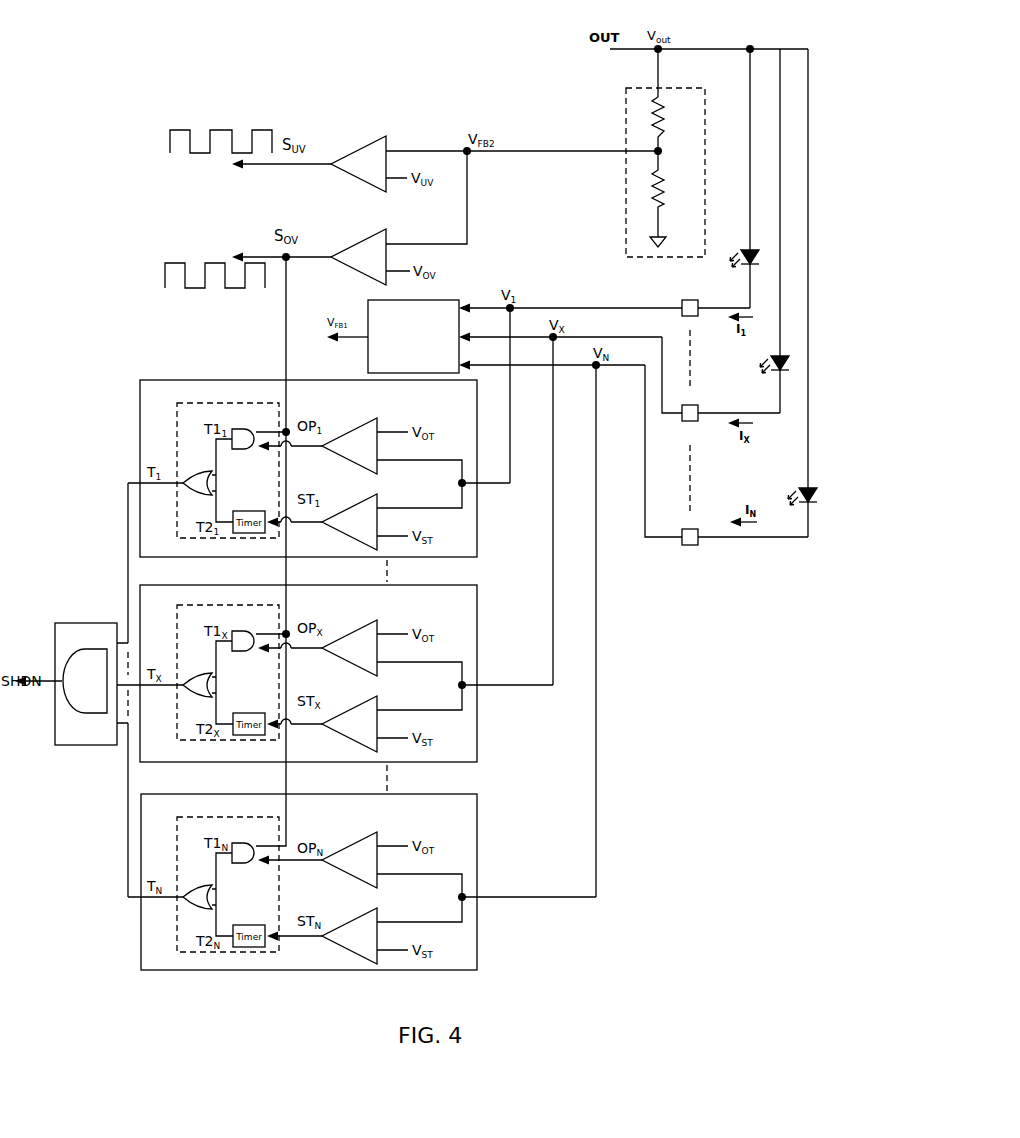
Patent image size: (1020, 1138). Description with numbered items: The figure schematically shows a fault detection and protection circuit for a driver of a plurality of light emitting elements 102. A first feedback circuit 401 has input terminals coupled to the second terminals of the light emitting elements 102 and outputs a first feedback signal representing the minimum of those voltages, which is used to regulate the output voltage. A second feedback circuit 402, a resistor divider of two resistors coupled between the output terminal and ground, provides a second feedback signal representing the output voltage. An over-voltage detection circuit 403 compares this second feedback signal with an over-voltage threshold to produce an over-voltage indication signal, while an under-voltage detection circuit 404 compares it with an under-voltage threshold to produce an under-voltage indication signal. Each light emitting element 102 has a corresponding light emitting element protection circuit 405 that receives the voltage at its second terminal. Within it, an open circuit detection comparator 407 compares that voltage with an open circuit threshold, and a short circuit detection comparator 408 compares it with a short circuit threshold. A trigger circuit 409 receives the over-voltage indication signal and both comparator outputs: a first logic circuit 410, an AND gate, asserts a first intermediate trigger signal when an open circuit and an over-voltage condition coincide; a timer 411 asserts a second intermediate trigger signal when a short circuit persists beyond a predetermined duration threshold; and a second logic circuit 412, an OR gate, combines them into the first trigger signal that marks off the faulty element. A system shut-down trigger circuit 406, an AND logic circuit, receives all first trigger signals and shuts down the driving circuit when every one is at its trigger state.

The light emitting element 102 is at (753, 253).
The first feedback circuit 401 is at (413, 336).
The second feedback circuit 402 is at (626, 106).
The over-voltage detection circuit 403 is at (363, 240).
The under-voltage detection circuit 404 is at (363, 147).
The light emitting element protection circuit 405 is at (477, 557).
The system shut-down trigger circuit 406 is at (73, 623).
The open circuit detection comparator 407 is at (337, 436).
The short circuit detection comparator 408 is at (337, 512).
The trigger circuit 409 is at (211, 404).
The first logic circuit 410 is at (246, 422).
The timer 411 is at (256, 503).
The second logic circuit 412 is at (189, 495).